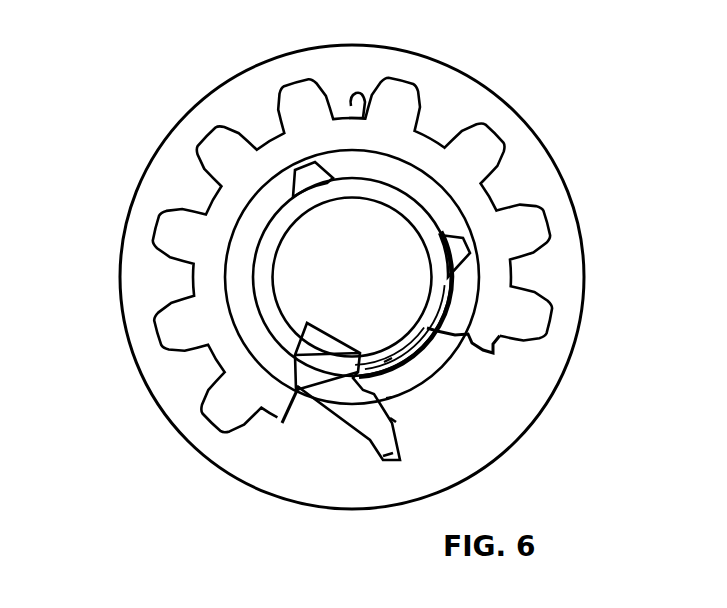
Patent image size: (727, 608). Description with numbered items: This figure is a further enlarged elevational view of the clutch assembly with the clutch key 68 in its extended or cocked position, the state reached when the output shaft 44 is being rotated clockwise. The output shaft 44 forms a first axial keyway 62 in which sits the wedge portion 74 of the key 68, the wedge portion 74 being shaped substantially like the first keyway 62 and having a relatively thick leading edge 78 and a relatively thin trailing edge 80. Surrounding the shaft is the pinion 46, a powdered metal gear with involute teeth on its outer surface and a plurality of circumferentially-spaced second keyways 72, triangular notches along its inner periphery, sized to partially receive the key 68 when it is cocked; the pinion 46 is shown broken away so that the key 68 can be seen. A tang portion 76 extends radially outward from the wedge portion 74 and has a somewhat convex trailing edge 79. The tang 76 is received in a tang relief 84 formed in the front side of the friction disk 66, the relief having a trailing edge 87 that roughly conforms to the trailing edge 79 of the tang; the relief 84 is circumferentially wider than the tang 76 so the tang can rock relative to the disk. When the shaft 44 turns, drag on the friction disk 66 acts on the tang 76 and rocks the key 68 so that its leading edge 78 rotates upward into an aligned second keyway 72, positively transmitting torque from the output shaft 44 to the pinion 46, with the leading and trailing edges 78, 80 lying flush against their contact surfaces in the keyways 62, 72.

The output shaft 44 is at (378, 242).
The pinion 46 is at (173, 230).
The first axial keyway 62 is at (310, 342).
The friction disk 66 is at (463, 90).
The key 68 is at (345, 400).
The second keyways 72 is at (302, 178).
The wedge portion 74 is at (299, 378).
The tang portion 76 is at (388, 458).
The leading edge 78 is at (294, 384).
The trailing edge 79 is at (393, 420).
The trailing edge 80 is at (390, 359).
The tang reliefs 84 is at (357, 93).
The trailing edge 87 is at (392, 396).